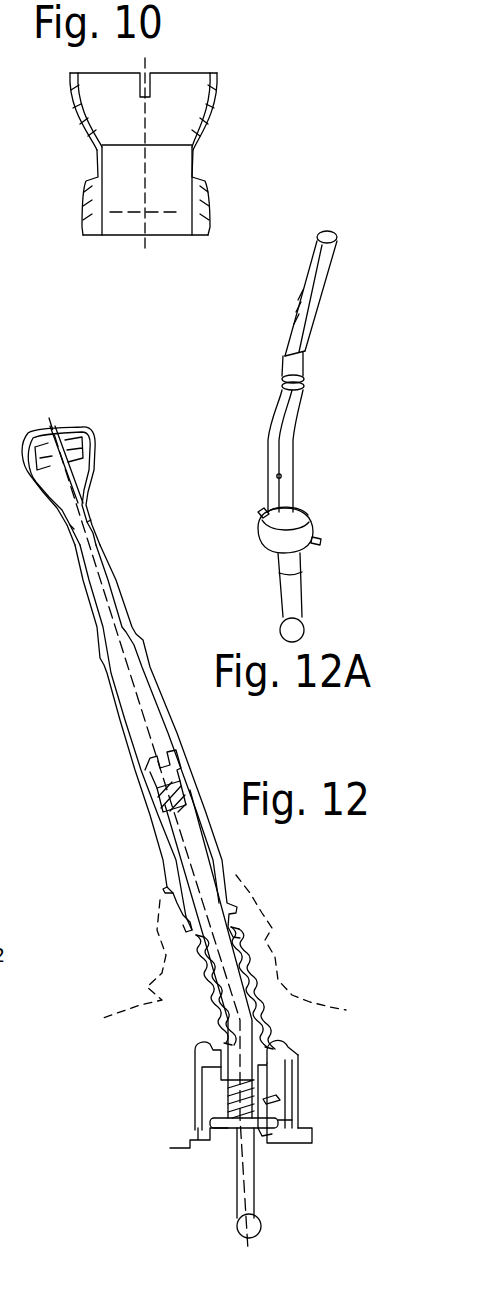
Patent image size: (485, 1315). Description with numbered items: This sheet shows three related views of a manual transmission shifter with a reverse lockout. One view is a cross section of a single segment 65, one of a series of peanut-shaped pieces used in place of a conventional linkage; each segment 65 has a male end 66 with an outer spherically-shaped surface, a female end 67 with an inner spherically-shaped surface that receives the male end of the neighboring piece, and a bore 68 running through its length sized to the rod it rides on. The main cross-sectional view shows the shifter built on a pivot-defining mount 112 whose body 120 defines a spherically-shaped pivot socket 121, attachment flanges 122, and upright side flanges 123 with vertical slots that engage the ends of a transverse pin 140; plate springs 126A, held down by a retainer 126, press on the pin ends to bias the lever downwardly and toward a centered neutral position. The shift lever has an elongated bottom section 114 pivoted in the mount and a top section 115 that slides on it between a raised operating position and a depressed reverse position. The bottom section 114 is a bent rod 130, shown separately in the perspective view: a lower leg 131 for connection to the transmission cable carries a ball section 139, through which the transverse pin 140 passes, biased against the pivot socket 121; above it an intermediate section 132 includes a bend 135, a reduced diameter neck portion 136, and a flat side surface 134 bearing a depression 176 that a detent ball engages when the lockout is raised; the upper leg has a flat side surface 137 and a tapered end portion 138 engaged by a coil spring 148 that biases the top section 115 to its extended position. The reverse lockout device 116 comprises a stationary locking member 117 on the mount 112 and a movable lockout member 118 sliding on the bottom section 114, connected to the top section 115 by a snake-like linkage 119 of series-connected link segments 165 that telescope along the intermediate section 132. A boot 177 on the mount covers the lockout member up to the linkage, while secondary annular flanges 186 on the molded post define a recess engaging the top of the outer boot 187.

In FIG. 10, the segment 65 is at (258, 42).
In FIG. 10, the male end 66 is at (216, 105).
In FIG. 10, the female end 67 is at (205, 201).
In FIG. 10, the bore 68 is at (171, 223).
In FIG. 12A, the bent rod 130 is at (320, 327).
In FIG. 12A, the bottom section 114 is at (262, 338).
In FIG. 12, the bottom section 114 is at (185, 845).
In FIG. 12A, the flat side surface 137 is at (310, 272).
In FIG. 12A, the tapered end portion 138 is at (335, 238).
In FIG. 12A, the reduced diameter neck portion 136 is at (305, 366).
In FIG. 12A, the intermediate section 132 is at (263, 357).
In FIG. 12A, the bend 135 is at (296, 428).
In FIG. 12A, the flat side surface 134 is at (275, 452).
In FIG. 12A, the depression 176 is at (277, 480).
In FIG. 12A, the ball section 139 is at (262, 540).
In FIG. 12, the ball section 139 is at (257, 1132).
In FIG. 12A, the transverse pin 140 is at (313, 549).
In FIG. 12, the transverse pin 140 is at (296, 1135).
In FIG. 12A, the lower leg 131 is at (277, 593).
In FIG. 12, the top section 115 is at (107, 673).
In FIG. 12, the secondary annular flanges 186 is at (168, 891).
In FIG. 12, the coil spring 148 is at (178, 793).
In FIG. 12, the outer boot 187 is at (252, 895).
In FIG. 12, the link segment 165 is at (228, 940).
In FIG. 12, the linkage 119 is at (195, 980).
In FIG. 12, the mount 112 is at (225, 1148).
In FIG. 12, the plate springs 126A is at (233, 1120).
In FIG. 12, the boot 177 is at (270, 1047).
In FIG. 12, the reverse lockout device 116 is at (288, 1050).
In FIG. 12, the movable lockout member 118 is at (290, 1068).
In FIG. 12, the stationary locking member 117 is at (280, 1083).
In FIG. 12, the retainer 126 is at (287, 1105).
In FIG. 12, the upright side flanges 123 is at (200, 1111).
In FIG. 12, the attachment flanges 122 is at (180, 1133).
In FIG. 12, the body 120 is at (233, 1150).
In FIG. 12, the pivot socket 121 is at (231, 1140).